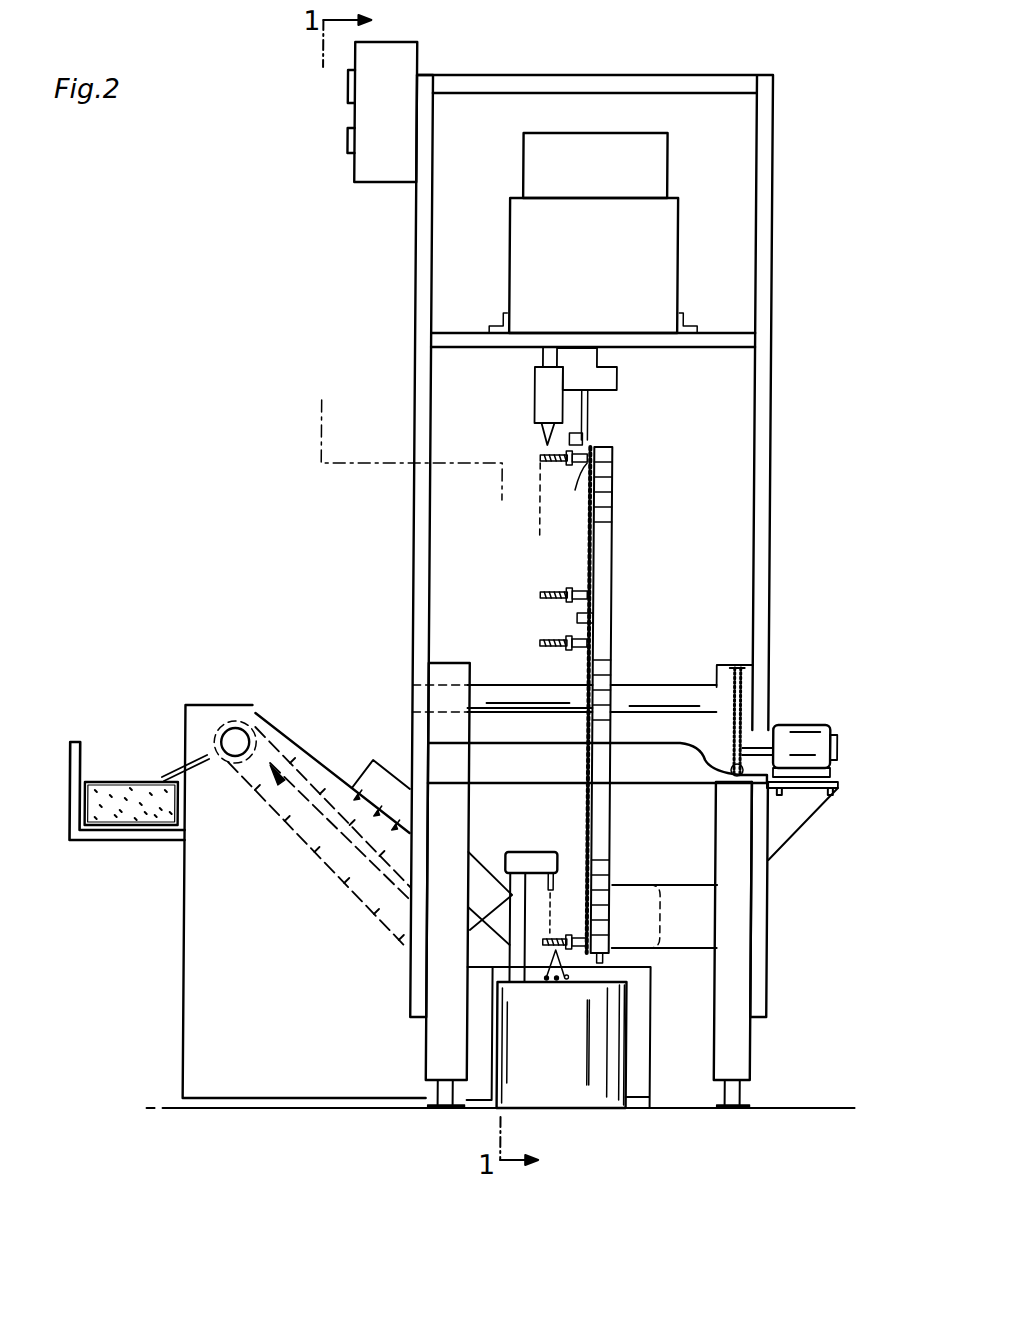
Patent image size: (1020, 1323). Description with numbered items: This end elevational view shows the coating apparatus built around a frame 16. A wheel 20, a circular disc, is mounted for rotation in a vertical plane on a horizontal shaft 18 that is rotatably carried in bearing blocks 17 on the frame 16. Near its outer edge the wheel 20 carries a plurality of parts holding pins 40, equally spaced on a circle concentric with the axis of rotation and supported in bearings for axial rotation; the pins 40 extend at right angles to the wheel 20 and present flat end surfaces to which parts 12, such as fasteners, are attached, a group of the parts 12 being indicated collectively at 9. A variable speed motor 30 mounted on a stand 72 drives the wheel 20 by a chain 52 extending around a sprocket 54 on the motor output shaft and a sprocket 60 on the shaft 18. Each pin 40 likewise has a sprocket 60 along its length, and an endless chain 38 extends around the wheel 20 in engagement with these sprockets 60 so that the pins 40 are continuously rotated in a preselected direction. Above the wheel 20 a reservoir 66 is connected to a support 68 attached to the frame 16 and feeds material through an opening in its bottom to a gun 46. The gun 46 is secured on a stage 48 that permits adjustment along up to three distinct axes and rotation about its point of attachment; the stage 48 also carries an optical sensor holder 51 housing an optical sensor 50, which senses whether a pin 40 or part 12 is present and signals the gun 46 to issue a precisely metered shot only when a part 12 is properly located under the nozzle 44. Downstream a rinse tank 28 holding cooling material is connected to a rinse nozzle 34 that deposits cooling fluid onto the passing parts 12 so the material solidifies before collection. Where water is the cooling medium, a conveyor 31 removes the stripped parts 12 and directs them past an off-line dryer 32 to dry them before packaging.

The screws 9 is at (546, 601).
The parts 12 is at (543, 458).
The frame 16 is at (793, 518).
The bearing blocks 17 is at (414, 677).
The horizontal shaft 18 is at (682, 687).
The wheel 20 is at (616, 570).
The rinse tank 28 is at (582, 1049).
The variable speed motor 30 is at (835, 732).
The conveyor 31 is at (262, 725).
The off-line dryer 32 is at (381, 762).
The rinse nozzle 34 is at (553, 850).
The endless chain 38 is at (590, 560).
The parts holding pins 40 is at (566, 491).
The nozzle 44 is at (542, 438).
The gun 46 is at (522, 393).
The stage 48 is at (615, 378).
The optical sensor 50 is at (585, 430).
The optical sensor holder 51 is at (589, 437).
The chain 52 is at (737, 723).
The sprocket 54 is at (738, 783).
The sprocket 60 is at (741, 668).
The reservoir 66 is at (616, 264).
The support 68 is at (459, 333).
The stand 72 is at (822, 803).